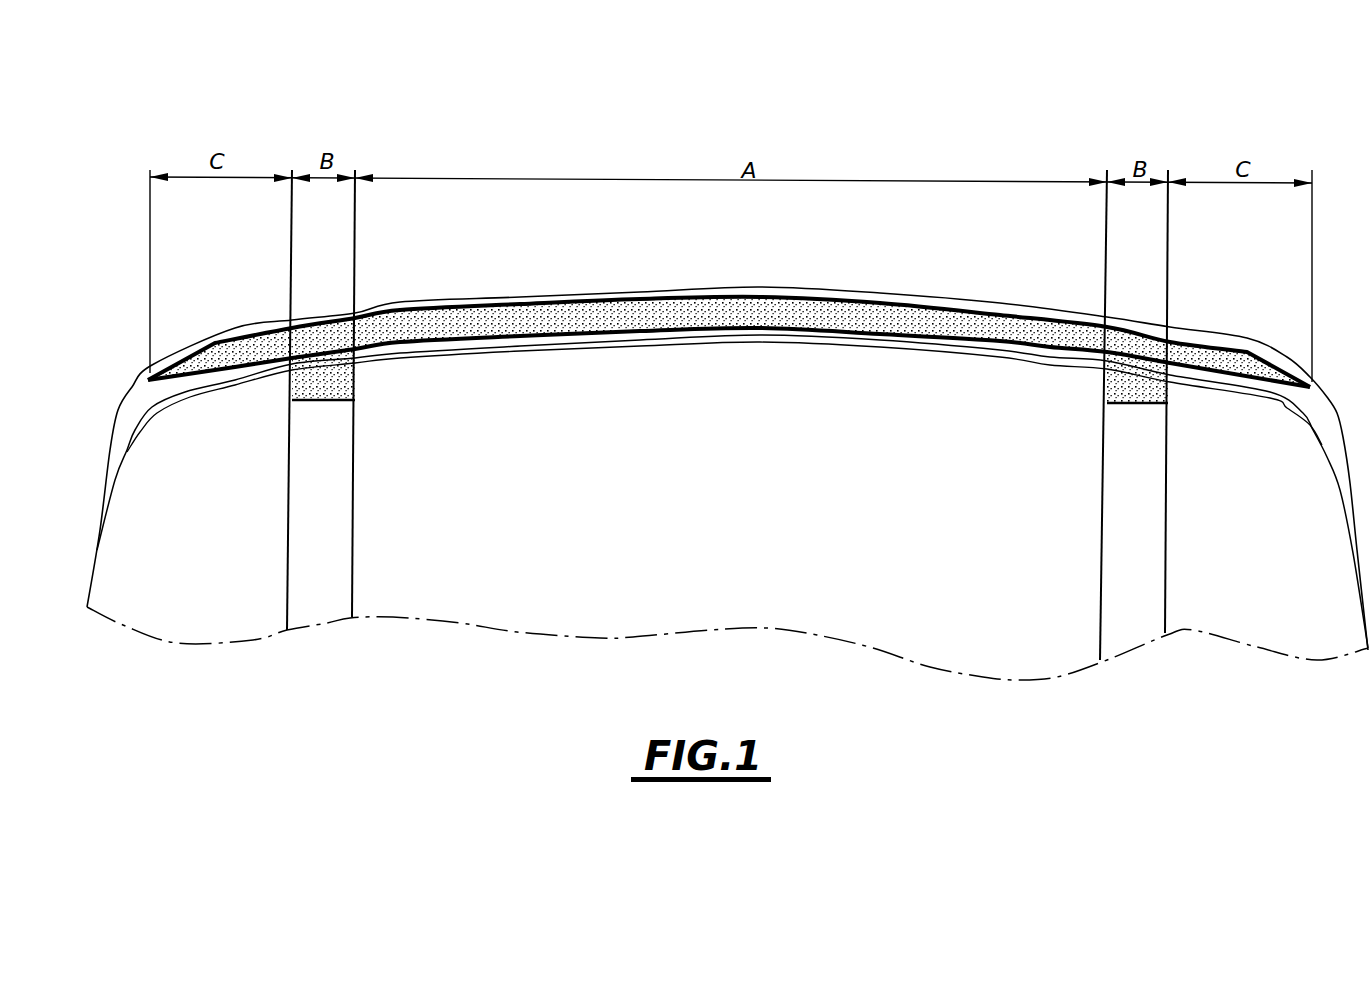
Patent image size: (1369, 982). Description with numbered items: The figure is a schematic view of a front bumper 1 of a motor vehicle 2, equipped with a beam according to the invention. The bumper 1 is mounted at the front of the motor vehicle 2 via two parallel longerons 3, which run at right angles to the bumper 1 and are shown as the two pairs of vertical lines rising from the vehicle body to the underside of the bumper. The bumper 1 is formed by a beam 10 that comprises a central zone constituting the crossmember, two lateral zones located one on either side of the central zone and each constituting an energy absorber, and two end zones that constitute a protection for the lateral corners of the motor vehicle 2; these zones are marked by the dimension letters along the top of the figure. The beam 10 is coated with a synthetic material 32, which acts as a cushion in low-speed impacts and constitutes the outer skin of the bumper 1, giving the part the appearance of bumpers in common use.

The bumper 1 is at (729, 215).
The motor vehicle 2 is at (562, 582).
The longerons 3 is at (323, 500).
The beam 10 is at (640, 317).
The synthetic material 32 is at (513, 305).